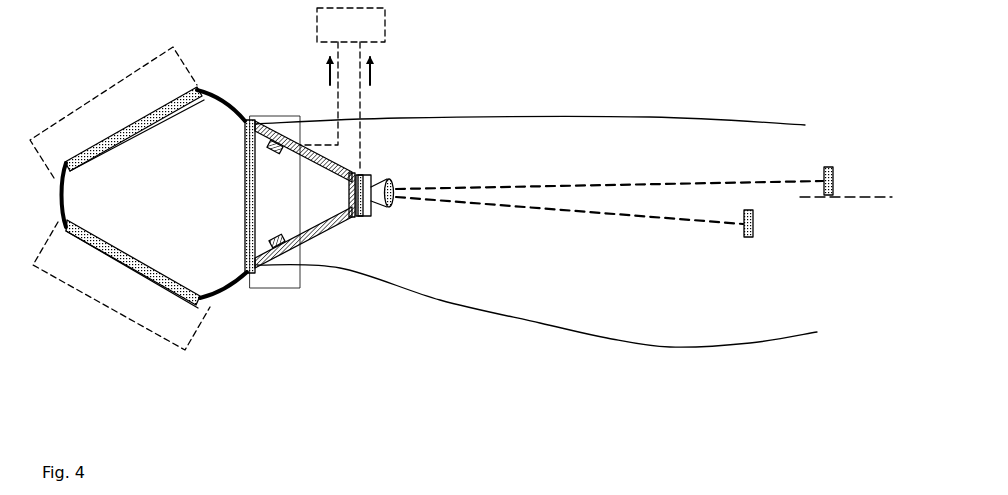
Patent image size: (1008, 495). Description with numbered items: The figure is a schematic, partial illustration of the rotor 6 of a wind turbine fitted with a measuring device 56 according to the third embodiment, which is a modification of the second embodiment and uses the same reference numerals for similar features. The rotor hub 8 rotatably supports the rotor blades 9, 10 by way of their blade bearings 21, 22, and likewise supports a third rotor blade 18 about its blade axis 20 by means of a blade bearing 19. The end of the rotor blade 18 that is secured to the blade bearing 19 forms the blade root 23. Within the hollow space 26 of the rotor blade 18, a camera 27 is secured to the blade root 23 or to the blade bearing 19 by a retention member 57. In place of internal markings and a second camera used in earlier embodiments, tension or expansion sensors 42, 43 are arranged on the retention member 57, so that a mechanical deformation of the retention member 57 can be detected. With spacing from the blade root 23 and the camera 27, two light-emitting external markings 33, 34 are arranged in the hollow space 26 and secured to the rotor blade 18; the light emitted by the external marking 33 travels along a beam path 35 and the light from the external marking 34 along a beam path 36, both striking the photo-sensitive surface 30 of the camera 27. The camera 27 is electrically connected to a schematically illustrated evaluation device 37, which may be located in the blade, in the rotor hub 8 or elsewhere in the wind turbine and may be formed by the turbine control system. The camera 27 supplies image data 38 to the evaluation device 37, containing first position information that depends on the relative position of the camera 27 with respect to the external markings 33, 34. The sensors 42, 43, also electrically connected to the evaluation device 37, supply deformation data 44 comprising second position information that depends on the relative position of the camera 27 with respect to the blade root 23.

The rotor 6 is at (215, 300).
The rotor hub 8 is at (205, 91).
The rotor blade 9 is at (60, 112).
The rotor blade 10 is at (82, 293).
The third rotor blade 18 is at (606, 345).
The blade bearing 19 is at (245, 162).
The blade axis 20 is at (850, 198).
The blade bearing 21 is at (147, 121).
The blade bearing 22 is at (155, 273).
The blade root 23 is at (260, 274).
The hollow space 26 is at (545, 314).
The camera 27 is at (367, 218).
The photo-sensitive surface 30 is at (357, 219).
The external marking 33 is at (830, 167).
The external marking 34 is at (750, 238).
The beam path 35 is at (657, 184).
The beam path 36 is at (608, 217).
The evaluation device 37 is at (385, 22).
The image data 38 is at (370, 75).
The tension or expansion sensor 42 is at (277, 139).
The tension or expansion sensor 43 is at (277, 248).
The deformation data 44 is at (330, 80).
The measuring device 56 is at (473, 73).
The retention member 57 is at (310, 228).